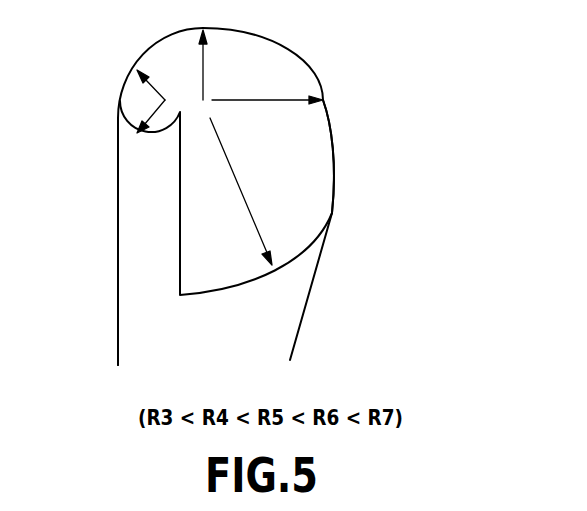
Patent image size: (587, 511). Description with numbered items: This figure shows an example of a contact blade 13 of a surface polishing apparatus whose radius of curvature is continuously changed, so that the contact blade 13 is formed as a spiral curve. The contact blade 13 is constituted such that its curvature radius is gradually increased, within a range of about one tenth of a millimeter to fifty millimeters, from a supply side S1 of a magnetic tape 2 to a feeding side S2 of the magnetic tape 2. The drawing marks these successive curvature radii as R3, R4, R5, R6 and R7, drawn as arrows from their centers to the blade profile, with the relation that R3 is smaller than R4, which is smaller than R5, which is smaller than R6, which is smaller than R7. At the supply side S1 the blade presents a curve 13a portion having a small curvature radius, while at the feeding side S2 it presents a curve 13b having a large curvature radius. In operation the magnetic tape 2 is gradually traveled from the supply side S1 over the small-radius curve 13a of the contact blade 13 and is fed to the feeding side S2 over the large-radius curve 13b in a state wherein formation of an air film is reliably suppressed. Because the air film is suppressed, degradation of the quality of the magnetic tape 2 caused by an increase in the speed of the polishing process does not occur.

The magnetic tape 2 is at (118, 229).
The contact blade 13 is at (360, 113).
The curve portion having a small curvature radius 13a is at (145, 143).
The curve having a large curvature radius 13b is at (334, 161).
The curvature radius R3 is at (145, 112).
The curvature radius R4 is at (163, 82).
The curvature radius R5 is at (219, 65).
The curvature radius R6 is at (267, 114).
The curvature radius R7 is at (244, 191).
The supply side S1 is at (96, 104).
The feeding side S2 is at (270, 333).